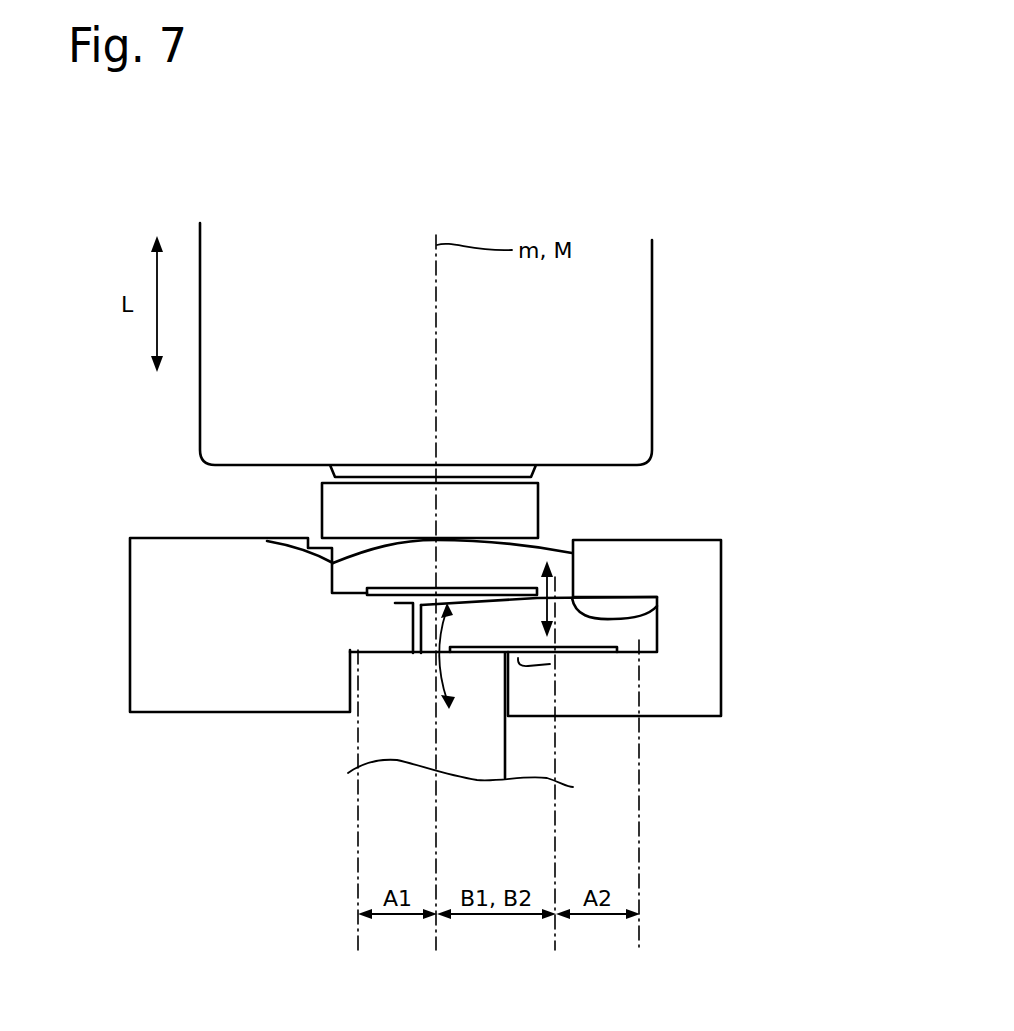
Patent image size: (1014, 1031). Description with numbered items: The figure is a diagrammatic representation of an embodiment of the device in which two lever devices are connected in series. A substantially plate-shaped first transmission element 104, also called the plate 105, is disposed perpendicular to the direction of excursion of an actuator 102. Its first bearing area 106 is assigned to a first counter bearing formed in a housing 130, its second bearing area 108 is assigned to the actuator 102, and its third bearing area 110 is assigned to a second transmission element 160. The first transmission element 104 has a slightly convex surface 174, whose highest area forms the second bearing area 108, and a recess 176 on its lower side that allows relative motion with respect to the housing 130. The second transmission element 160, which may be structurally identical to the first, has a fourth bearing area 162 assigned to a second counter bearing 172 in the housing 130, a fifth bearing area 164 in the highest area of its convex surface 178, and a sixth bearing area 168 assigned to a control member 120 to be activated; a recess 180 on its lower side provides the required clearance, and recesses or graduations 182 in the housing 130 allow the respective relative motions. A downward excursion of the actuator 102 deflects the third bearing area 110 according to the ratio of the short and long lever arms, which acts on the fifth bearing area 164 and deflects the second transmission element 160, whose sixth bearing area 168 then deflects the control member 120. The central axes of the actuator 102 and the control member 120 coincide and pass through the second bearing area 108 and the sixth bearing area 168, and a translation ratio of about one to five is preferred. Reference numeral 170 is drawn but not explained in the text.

The actuator 102 is at (652, 283).
The first transmission element 104 is at (627, 557).
The plate 105 is at (533, 567).
The first bearing area 106 is at (330, 590).
The second bearing area 108 is at (270, 540).
The third bearing area 110 is at (575, 582).
The control member 120 is at (482, 727).
The housing 130 is at (153, 688).
The second transmission element 160 is at (660, 623).
The fourth bearing area 162 is at (657, 648).
The fifth bearing area 164 is at (652, 634).
The sixth bearing area 168 is at (430, 655).
The plate 170 is at (333, 596).
The second counter bearing 172 is at (660, 657).
The convex surface 174 is at (347, 538).
The recess 176 is at (469, 597).
The convex surface 178 is at (633, 597).
The recess 180 is at (567, 652).
The recesses or graduations 182 is at (320, 538).